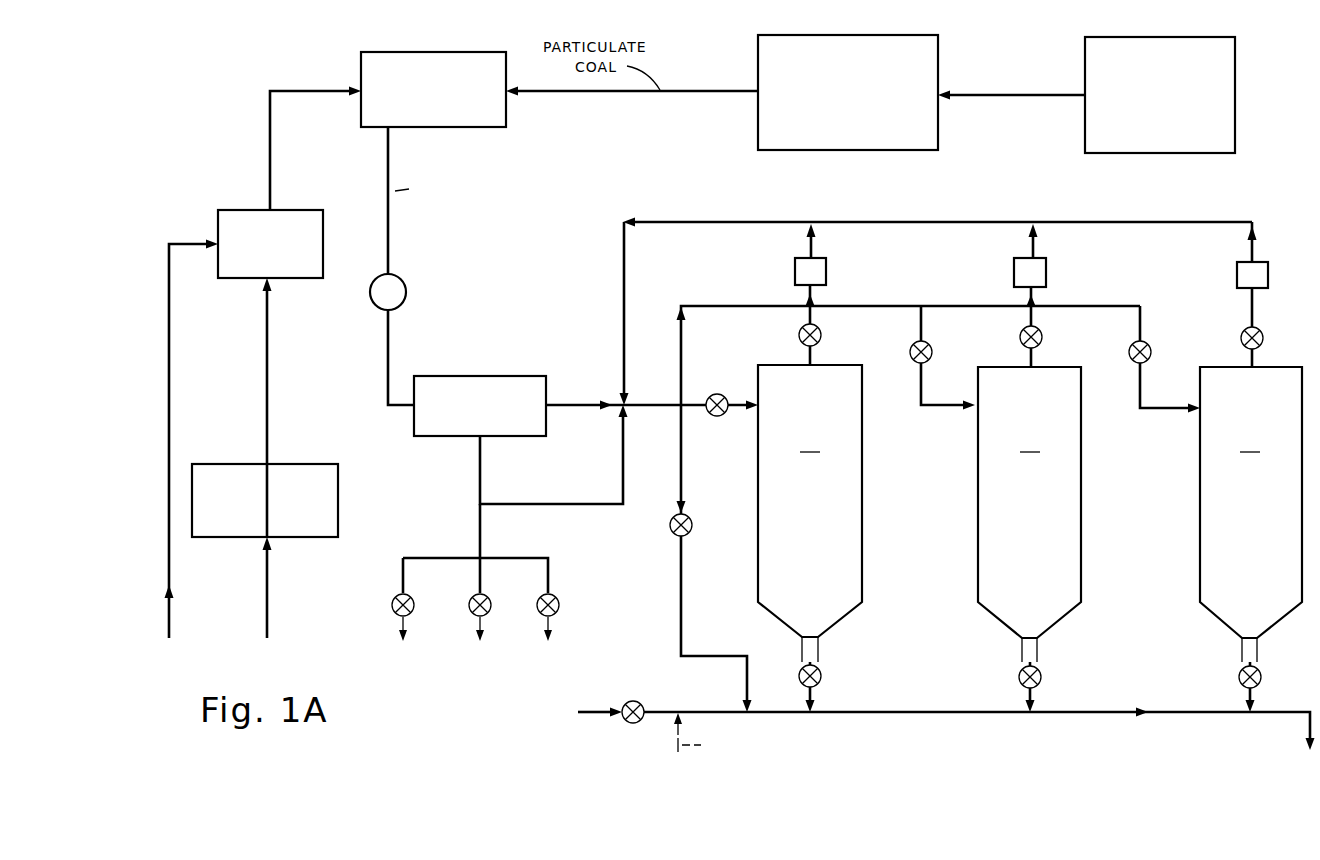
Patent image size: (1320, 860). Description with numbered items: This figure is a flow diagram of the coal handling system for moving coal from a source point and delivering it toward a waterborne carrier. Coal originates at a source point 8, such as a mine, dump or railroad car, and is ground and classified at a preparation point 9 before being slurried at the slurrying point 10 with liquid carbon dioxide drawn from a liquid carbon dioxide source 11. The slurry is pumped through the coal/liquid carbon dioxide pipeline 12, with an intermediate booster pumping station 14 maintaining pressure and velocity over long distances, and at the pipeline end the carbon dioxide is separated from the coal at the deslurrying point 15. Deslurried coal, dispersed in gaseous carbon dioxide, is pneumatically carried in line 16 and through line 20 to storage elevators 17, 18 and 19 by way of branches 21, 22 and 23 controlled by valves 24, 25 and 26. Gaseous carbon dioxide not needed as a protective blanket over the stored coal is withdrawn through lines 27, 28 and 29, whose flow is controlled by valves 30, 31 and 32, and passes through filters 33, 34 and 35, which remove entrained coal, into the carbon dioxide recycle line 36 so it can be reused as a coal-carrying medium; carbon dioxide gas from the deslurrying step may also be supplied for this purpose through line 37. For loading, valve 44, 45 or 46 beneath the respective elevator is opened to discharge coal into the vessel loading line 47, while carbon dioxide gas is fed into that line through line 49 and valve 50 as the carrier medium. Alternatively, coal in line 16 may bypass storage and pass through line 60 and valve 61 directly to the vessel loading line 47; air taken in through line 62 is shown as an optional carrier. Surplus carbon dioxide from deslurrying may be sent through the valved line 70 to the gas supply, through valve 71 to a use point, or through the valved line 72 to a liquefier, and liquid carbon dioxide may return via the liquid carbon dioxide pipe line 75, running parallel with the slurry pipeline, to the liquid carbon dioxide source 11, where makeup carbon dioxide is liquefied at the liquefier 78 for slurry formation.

The source point 8 is at (1106, 42).
The preparation point 9 is at (786, 45).
The slurrying point 10 is at (403, 58).
The liquid carbon dioxide source 11 is at (256, 212).
The coal/liquid carbon dioxide pipeline 12 is at (388, 174).
The intermediate booster pumping station 14 is at (404, 300).
The deslurrying point 15 is at (478, 383).
The line 16 is at (650, 400).
The storage elevator 17 is at (810, 513).
The storage elevator 18 is at (1029, 514).
The storage elevator 19 is at (1251, 514).
The line 20 is at (722, 305).
The branch 21 is at (695, 401).
The branch 22 is at (925, 330).
The branch 23 is at (1143, 328).
The valve 24 is at (719, 419).
The valve 25 is at (912, 358).
The valve 26 is at (1152, 350).
The line 27 is at (806, 293).
The line 28 is at (1036, 298).
The line 29 is at (1248, 312).
The valve 30 is at (822, 340).
The valve 31 is at (1043, 341).
The valve 32 is at (1264, 342).
The filter 33 is at (797, 272).
The filter 34 is at (1016, 273).
The filter 35 is at (1238, 273).
The carbon dioxide recycle line 36 is at (1136, 224).
The line 37 is at (620, 443).
The valve 44 is at (822, 673).
The valve 45 is at (1042, 680).
The valve 46 is at (1262, 680).
The vessel loading line 47 is at (1182, 712).
The line 49 is at (656, 711).
The valve 50 is at (623, 701).
The line 60 is at (678, 626).
The valve 61 is at (668, 531).
The line 62 is at (700, 734).
The valved line 70 is at (550, 575).
The valve 71 is at (478, 581).
The valved line 72 is at (400, 577).
The liquid carbon dioxide pipe line 75 is at (167, 623).
The liquefier 78 is at (228, 470).